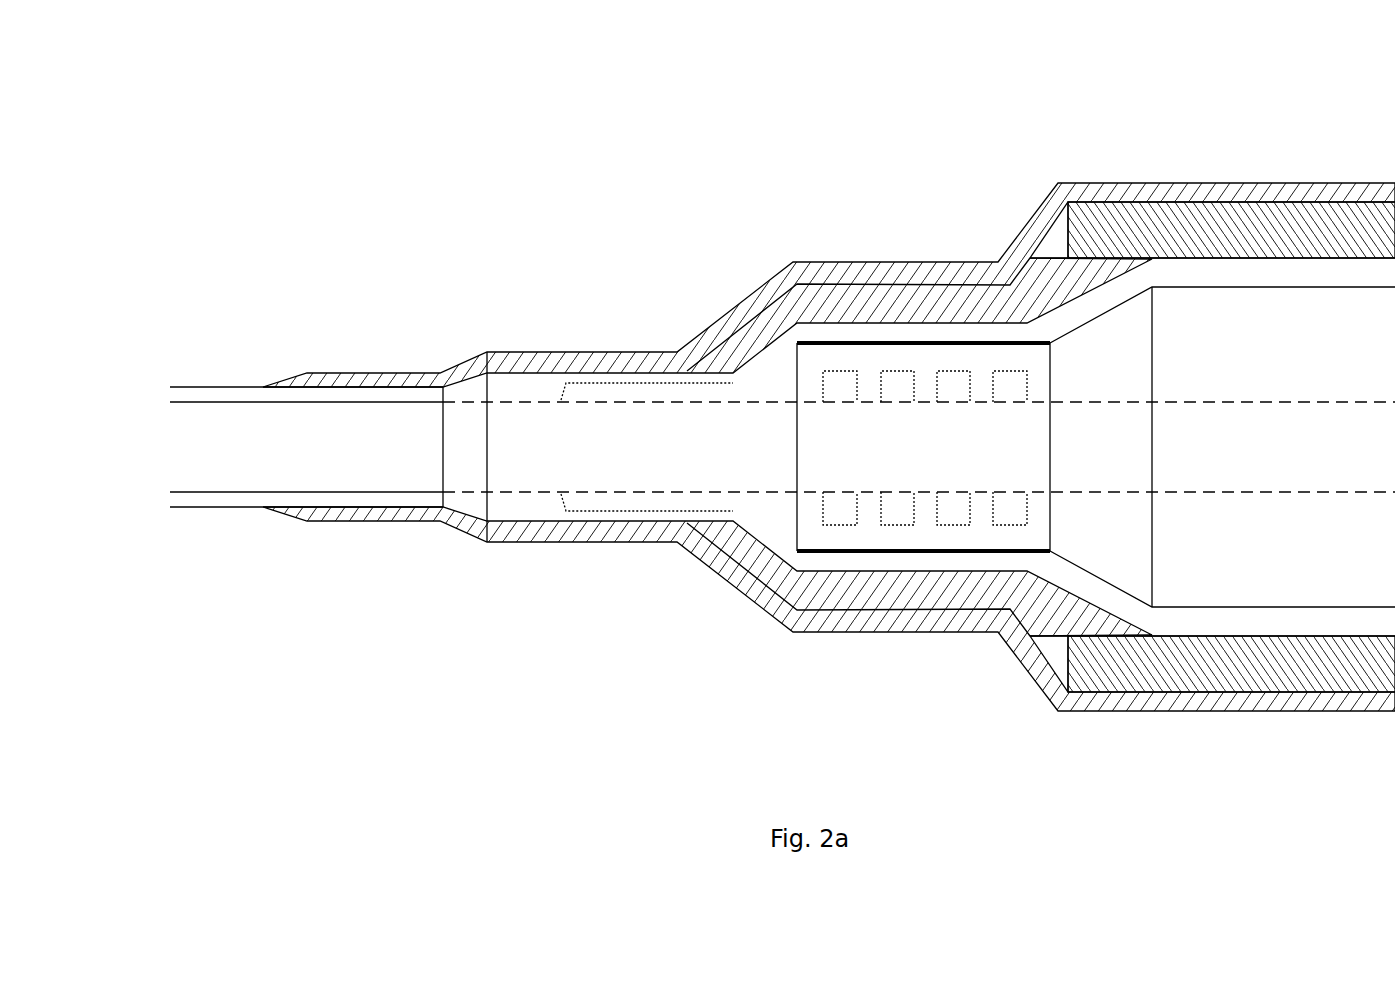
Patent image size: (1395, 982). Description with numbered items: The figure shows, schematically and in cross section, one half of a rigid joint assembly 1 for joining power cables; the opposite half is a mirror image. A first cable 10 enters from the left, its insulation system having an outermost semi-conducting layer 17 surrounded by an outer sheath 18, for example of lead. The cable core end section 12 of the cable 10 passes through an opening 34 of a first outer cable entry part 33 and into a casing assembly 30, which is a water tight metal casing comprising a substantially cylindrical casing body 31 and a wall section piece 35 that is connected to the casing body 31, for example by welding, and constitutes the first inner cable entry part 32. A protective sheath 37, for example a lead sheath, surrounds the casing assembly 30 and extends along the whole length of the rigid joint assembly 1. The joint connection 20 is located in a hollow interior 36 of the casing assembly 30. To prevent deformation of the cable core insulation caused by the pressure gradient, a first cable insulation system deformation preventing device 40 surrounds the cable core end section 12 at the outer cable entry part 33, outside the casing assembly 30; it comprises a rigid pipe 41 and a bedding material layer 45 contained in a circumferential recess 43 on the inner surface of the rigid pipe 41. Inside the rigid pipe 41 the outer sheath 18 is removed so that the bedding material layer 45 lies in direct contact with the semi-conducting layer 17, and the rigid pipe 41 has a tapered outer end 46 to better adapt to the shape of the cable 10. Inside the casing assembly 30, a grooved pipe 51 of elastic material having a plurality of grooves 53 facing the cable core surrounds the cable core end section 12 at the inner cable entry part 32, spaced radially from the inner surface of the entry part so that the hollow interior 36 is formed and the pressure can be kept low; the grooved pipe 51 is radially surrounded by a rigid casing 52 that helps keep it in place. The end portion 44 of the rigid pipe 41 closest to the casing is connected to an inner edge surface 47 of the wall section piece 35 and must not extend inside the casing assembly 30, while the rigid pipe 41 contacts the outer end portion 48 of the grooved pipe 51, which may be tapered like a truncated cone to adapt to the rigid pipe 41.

The rigid joint assembly 1 is at (445, 210).
The first cable 10 is at (183, 387).
The cable core end section 12 is at (453, 530).
The outermost semi-conducting layer 17 is at (257, 493).
The outer sheath 18 is at (210, 500).
The joint connection 20 is at (1108, 335).
The casing assembly 30 is at (1130, 730).
The casing body 31 is at (1227, 227).
The first inner cable entry part 32 is at (918, 640).
The first outer cable entry part 33 is at (567, 552).
The opening 34 is at (268, 422).
The wall section piece 35 is at (990, 607).
The hollow interior 36 is at (812, 558).
The protective sheath 37 is at (373, 380).
The first cable insulation system deformation preventing device 40 is at (533, 512).
The rigid pipe 41 is at (583, 383).
The circumferential recess 43 is at (570, 394).
The end portion 44 is at (703, 363).
The bedding material layer 45 is at (640, 385).
The tapered outer end 46 is at (462, 388).
The inner edge surface 47 is at (707, 512).
The outer end portion 48 is at (758, 525).
The grooved pipe 51 is at (867, 362).
The rigid casing 52 is at (1023, 343).
The grooves 53 is at (953, 388).